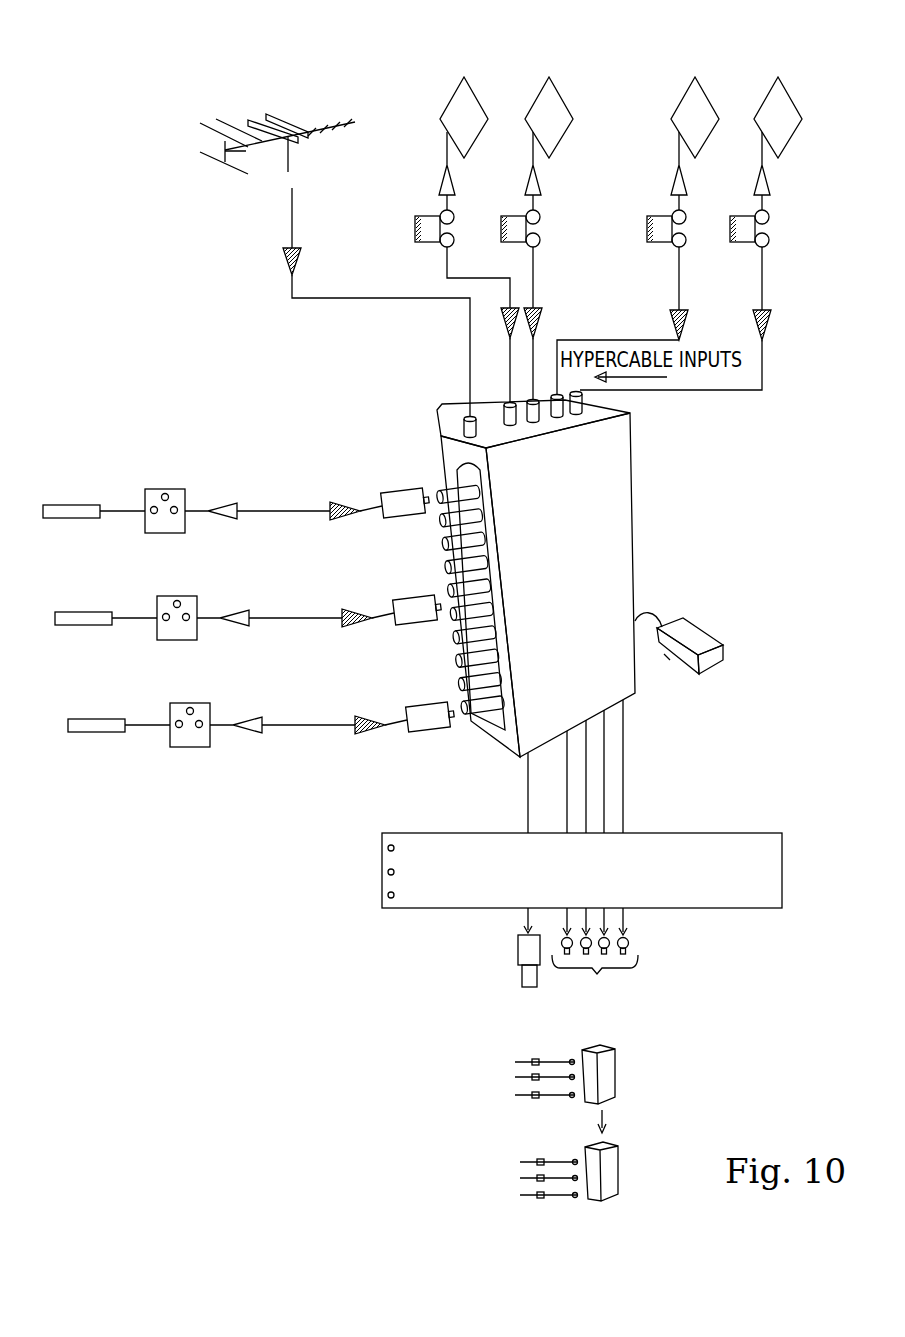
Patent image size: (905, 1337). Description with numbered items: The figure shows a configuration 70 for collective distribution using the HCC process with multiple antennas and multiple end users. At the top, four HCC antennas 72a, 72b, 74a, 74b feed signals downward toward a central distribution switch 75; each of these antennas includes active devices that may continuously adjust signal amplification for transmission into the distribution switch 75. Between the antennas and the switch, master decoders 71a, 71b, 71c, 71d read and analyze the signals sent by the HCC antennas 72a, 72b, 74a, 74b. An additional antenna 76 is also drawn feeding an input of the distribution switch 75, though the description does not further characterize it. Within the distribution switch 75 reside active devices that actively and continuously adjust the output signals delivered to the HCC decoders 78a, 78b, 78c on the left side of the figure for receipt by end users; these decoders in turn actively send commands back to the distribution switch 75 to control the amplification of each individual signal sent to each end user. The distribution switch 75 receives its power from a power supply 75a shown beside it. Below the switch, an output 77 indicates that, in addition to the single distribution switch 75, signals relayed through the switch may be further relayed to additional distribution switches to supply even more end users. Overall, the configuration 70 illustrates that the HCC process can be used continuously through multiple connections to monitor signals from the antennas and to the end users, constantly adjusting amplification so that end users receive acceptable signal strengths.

The configuration 70 is at (122, 275).
The master decoder 71a is at (415, 230).
The master decoder 71b is at (500, 217).
The master decoder 71c is at (645, 243).
The master decoder 71d is at (737, 243).
The HCC antenna 72a is at (452, 90).
The HCC antenna 72b is at (560, 143).
The HCC antenna 74a is at (683, 100).
The HCC antenna 74b is at (785, 147).
The distribution switch 75 is at (635, 513).
The power supply 75a is at (699, 634).
The terrestrial antenna 76 is at (312, 128).
The output 77 is at (642, 915).
The HCC decoder 78a is at (72, 505).
The HCC decoder 78b is at (78, 613).
The HCC decoder 78c is at (82, 732).